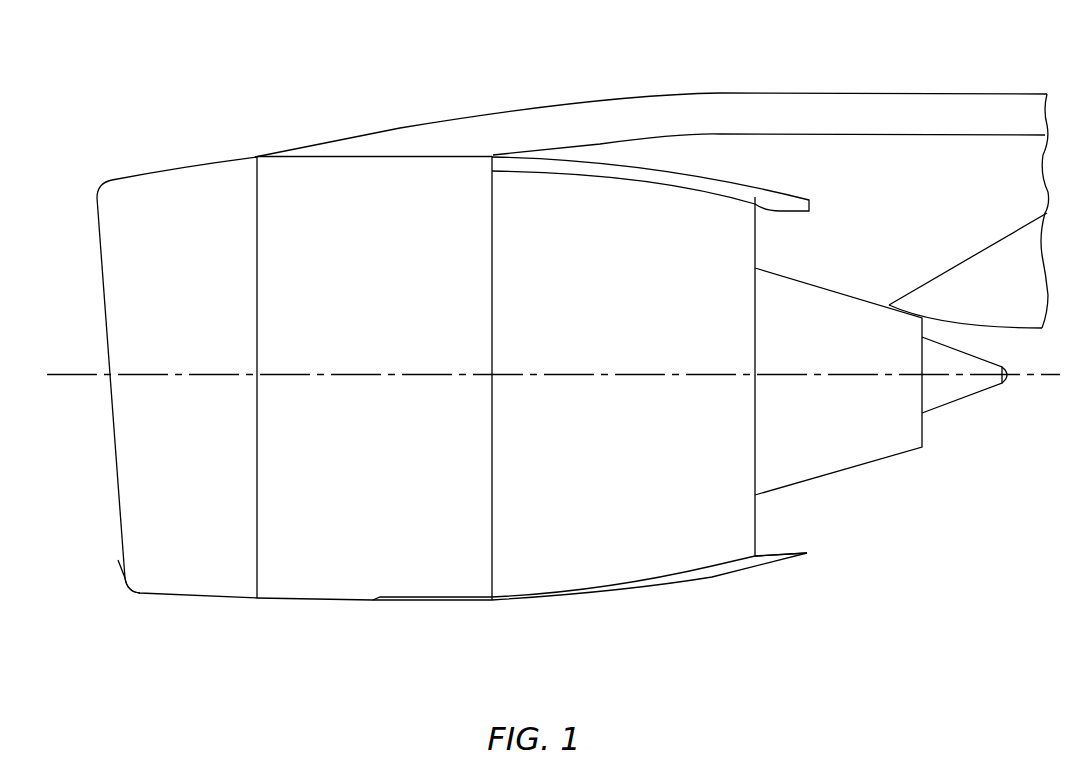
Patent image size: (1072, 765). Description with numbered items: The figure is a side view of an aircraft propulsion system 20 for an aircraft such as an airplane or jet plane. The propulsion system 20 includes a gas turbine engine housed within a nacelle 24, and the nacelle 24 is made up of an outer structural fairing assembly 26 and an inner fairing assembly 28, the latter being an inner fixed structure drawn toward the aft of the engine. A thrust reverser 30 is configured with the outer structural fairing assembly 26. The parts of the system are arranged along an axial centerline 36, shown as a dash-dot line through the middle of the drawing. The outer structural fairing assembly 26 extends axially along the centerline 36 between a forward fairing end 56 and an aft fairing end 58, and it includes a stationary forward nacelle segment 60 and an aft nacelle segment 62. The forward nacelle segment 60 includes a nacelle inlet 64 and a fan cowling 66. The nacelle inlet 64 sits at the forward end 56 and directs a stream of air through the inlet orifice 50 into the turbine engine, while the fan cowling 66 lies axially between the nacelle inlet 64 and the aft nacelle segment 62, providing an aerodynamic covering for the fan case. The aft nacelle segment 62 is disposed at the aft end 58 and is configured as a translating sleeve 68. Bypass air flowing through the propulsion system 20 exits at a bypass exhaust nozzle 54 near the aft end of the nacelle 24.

The aircraft propulsion system 20 is at (146, 74).
The nacelle 24 is at (264, 430).
The outer structural fairing assembly 26 is at (389, 612).
The inner fairing assembly 28 is at (875, 468).
The thrust reverser 30 is at (533, 614).
The axial centerline 36 is at (58, 377).
The inlet orifice 50 is at (118, 520).
The bypass exhaust nozzle 54 is at (758, 519).
The forward fairing end 56 is at (123, 575).
The aft fairing end 58 is at (755, 537).
The stationary forward nacelle segment 60 is at (313, 144).
The aft nacelle segment 62 is at (605, 168).
The nacelle inlet 64 is at (182, 597).
The fan cowling 66 is at (298, 597).
The translating sleeve 68 is at (586, 611).